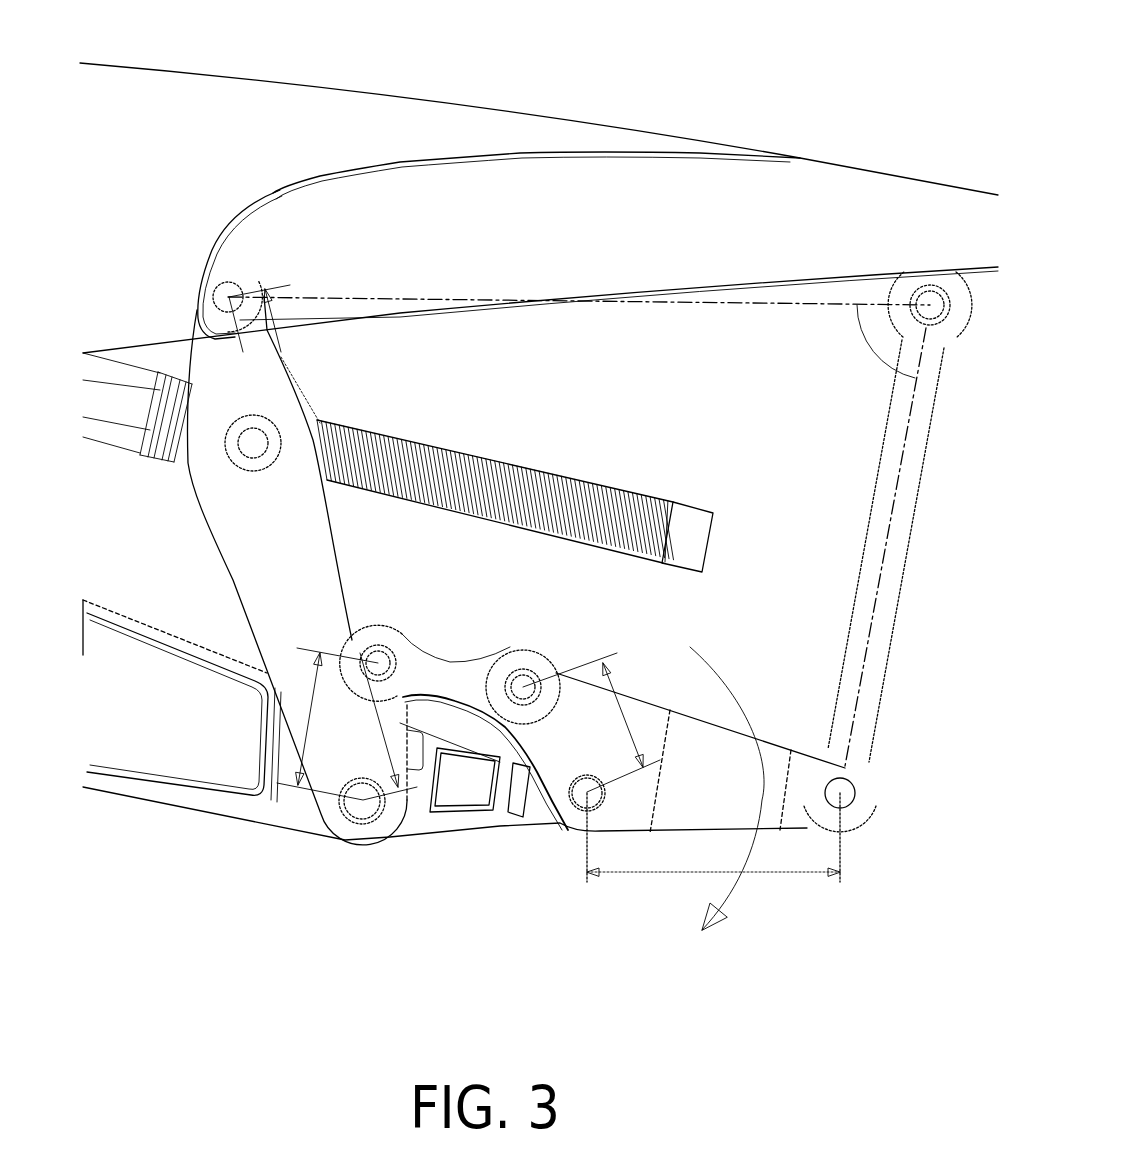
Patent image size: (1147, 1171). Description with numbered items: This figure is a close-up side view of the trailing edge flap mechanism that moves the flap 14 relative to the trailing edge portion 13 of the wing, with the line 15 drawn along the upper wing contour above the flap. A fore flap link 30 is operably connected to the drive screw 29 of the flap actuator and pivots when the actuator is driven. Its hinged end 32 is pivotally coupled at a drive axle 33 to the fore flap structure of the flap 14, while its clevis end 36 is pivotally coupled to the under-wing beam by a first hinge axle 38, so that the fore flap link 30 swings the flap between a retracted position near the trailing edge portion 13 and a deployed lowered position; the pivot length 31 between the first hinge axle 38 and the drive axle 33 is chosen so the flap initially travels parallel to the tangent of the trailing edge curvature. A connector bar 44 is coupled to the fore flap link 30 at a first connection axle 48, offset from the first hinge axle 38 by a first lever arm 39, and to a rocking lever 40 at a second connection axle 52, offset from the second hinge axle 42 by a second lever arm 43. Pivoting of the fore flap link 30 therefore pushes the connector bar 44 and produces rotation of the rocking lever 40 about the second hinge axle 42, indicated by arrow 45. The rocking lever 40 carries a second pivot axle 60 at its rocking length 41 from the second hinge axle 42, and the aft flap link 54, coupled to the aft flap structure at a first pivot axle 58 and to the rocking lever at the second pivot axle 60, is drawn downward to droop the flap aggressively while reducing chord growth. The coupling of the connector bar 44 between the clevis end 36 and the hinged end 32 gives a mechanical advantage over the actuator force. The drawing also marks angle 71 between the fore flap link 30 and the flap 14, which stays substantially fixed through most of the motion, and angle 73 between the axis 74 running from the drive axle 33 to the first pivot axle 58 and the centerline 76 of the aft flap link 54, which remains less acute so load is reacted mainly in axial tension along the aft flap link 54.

The trailing edge portion 13 is at (633, 130).
The flap 14 is at (715, 207).
The reference line 15 is at (453, 108).
The drive screw 29 is at (500, 470).
The fore flap link 30 is at (270, 550).
The pivot length 31 is at (310, 453).
The hinged end 32 is at (198, 326).
The drive axle 33 is at (223, 287).
The clevis end 36 is at (345, 815).
The first hinge axle 38 is at (370, 810).
The first lever arm 39 is at (300, 720).
The rocking lever 40 is at (707, 780).
The rocking length 41 is at (783, 872).
The second hinge axle 42 is at (582, 797).
The second lever arm 43 is at (630, 710).
The connector bar 44 is at (445, 675).
The arrow 45 is at (748, 717).
The first connection axle 48 is at (378, 648).
The second connection axle 52 is at (525, 677).
The aft flap link 54 is at (881, 507).
The first pivot axle 58 is at (920, 312).
The second pivot axle 60 is at (845, 795).
The angle 71 is at (266, 324).
The angle 73 is at (862, 340).
The axis 74 is at (707, 300).
The centerline 76 is at (882, 572).